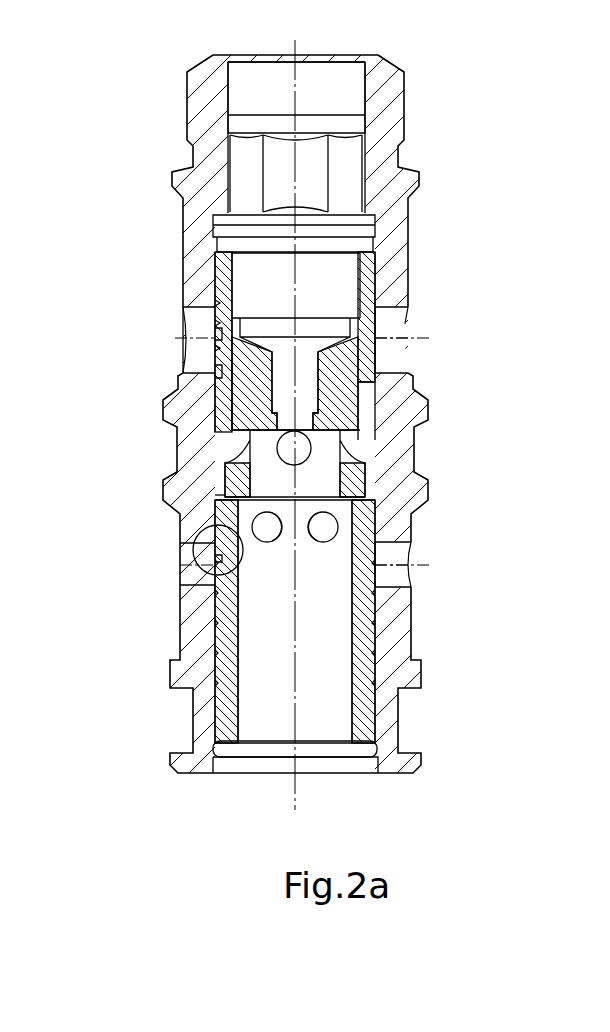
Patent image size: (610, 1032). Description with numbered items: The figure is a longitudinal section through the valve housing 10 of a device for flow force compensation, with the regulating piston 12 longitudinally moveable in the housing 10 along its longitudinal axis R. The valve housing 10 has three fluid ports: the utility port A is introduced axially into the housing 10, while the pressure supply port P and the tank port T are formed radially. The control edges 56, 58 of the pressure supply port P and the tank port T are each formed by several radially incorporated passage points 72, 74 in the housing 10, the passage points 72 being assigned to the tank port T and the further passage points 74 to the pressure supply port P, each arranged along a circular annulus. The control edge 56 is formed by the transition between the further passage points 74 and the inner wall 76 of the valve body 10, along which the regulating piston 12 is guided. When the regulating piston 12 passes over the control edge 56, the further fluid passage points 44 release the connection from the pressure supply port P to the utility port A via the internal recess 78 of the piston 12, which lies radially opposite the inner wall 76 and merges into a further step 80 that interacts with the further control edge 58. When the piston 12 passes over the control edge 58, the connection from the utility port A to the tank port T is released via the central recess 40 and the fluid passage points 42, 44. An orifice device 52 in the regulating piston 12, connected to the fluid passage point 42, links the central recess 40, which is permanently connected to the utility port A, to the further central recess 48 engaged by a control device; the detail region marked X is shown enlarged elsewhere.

The valve housing 10 is at (373, 127).
The regulating piston 12 is at (340, 412).
The central recess 40 is at (277, 723).
The fluid passage point 42 is at (243, 437).
The further fluid passage point 44 is at (217, 523).
The further central recess 48 is at (313, 268).
The orifice device 52 is at (297, 382).
The control edge 56 is at (197, 563).
The control edge 58 is at (222, 392).
The passage point 72 is at (397, 322).
The further passage point 74 is at (395, 553).
The inner wall 76 is at (200, 500).
The internal recess 78 is at (222, 390).
The further step 80 is at (222, 334).
The tank port T is at (392, 357).
The pressure supply port P is at (398, 575).
The longitudinal axis R is at (293, 650).
The utility port A is at (322, 770).
The detail X is at (157, 582).